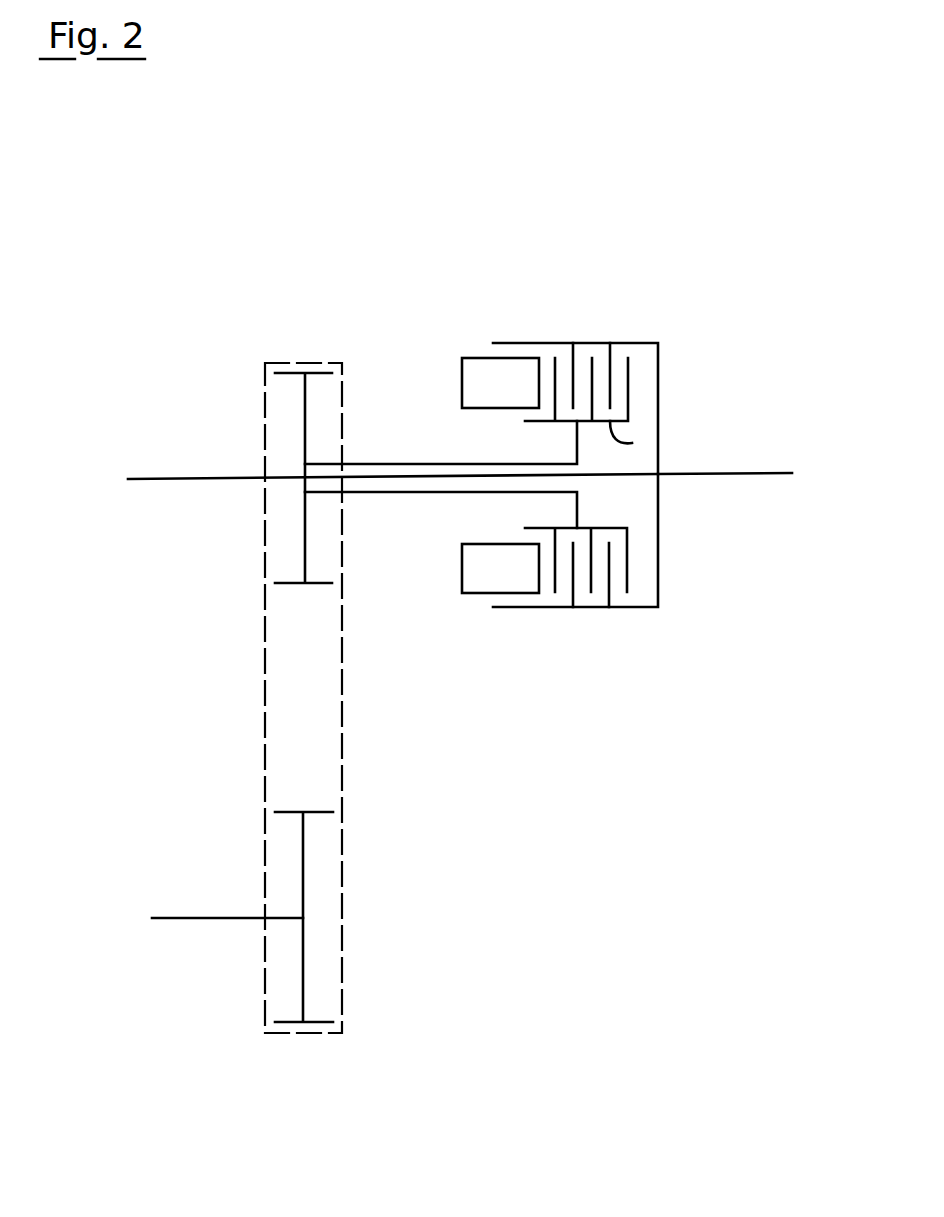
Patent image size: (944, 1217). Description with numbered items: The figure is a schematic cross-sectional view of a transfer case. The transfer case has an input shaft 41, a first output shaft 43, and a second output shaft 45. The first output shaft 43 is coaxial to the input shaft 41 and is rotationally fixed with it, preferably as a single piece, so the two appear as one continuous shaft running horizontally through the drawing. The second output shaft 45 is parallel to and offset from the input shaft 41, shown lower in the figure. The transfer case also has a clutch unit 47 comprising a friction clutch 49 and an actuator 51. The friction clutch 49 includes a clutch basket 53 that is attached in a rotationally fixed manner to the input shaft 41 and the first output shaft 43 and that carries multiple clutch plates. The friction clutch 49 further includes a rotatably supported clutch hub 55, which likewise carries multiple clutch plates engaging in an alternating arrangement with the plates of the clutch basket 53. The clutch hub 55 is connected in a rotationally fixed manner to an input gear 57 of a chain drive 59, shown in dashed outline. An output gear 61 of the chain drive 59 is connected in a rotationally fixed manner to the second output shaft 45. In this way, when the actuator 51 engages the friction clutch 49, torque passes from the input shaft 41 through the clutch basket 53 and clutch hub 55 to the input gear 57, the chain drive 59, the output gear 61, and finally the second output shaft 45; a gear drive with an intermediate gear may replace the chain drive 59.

The input shaft 41 is at (162, 480).
The first output shaft 43 is at (763, 473).
The second output shaft 45 is at (180, 918).
The clutch unit 47 is at (553, 408).
The friction clutch 49 is at (598, 347).
The actuator 51 is at (452, 368).
The clutch basket 53 is at (638, 342).
The clutch hub 55 is at (632, 443).
The input gear 57 is at (303, 402).
The chain drive 59 is at (265, 712).
The output gear 61 is at (300, 972).